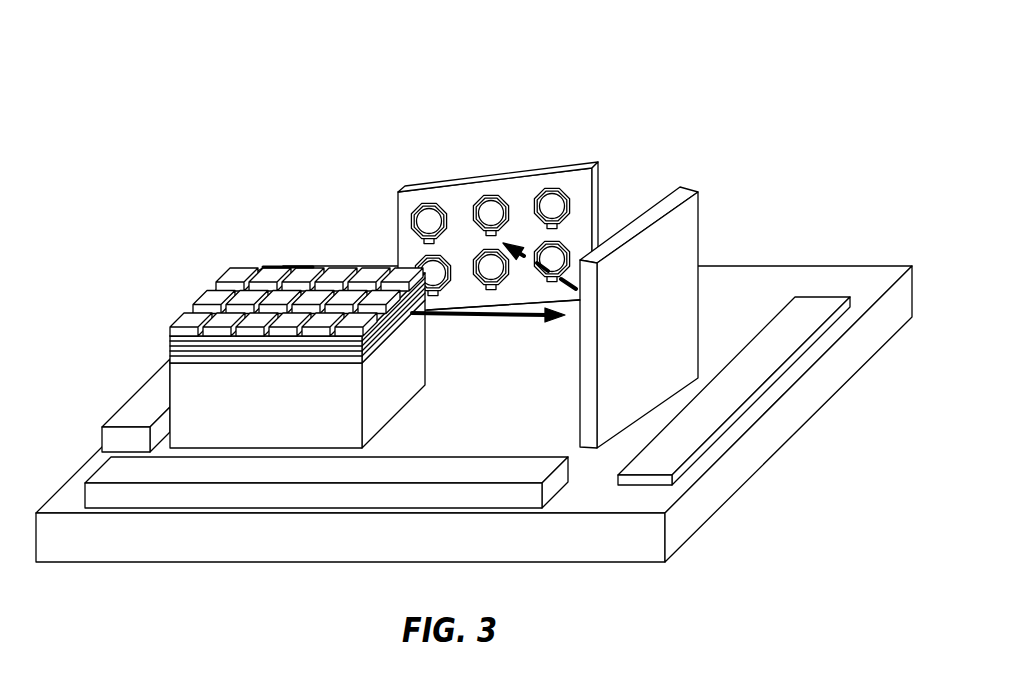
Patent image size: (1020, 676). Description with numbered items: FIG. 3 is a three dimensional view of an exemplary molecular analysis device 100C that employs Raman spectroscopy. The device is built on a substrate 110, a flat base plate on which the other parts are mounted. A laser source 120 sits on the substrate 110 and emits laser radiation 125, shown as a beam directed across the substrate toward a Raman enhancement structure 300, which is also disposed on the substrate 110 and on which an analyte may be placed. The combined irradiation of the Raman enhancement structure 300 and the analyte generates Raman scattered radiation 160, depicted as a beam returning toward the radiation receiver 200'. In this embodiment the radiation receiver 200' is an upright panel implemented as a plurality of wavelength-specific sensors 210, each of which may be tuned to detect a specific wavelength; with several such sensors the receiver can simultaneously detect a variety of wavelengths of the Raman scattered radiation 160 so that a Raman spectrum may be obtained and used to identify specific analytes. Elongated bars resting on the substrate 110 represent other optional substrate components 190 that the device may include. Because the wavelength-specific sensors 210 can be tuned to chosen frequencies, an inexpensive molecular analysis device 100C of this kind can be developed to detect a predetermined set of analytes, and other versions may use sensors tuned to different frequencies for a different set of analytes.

The molecular analysis device 100C is at (215, 118).
The substrate 110 is at (752, 453).
The laser source 120 is at (247, 270).
The laser radiation 125 is at (522, 322).
The Raman scattered radiation 160 is at (527, 248).
The substrate components 190 is at (143, 398).
The radiation receiver 200' is at (495, 210).
The wavelength-specific sensors 210 is at (490, 196).
The Raman enhancement structure 300 is at (677, 246).